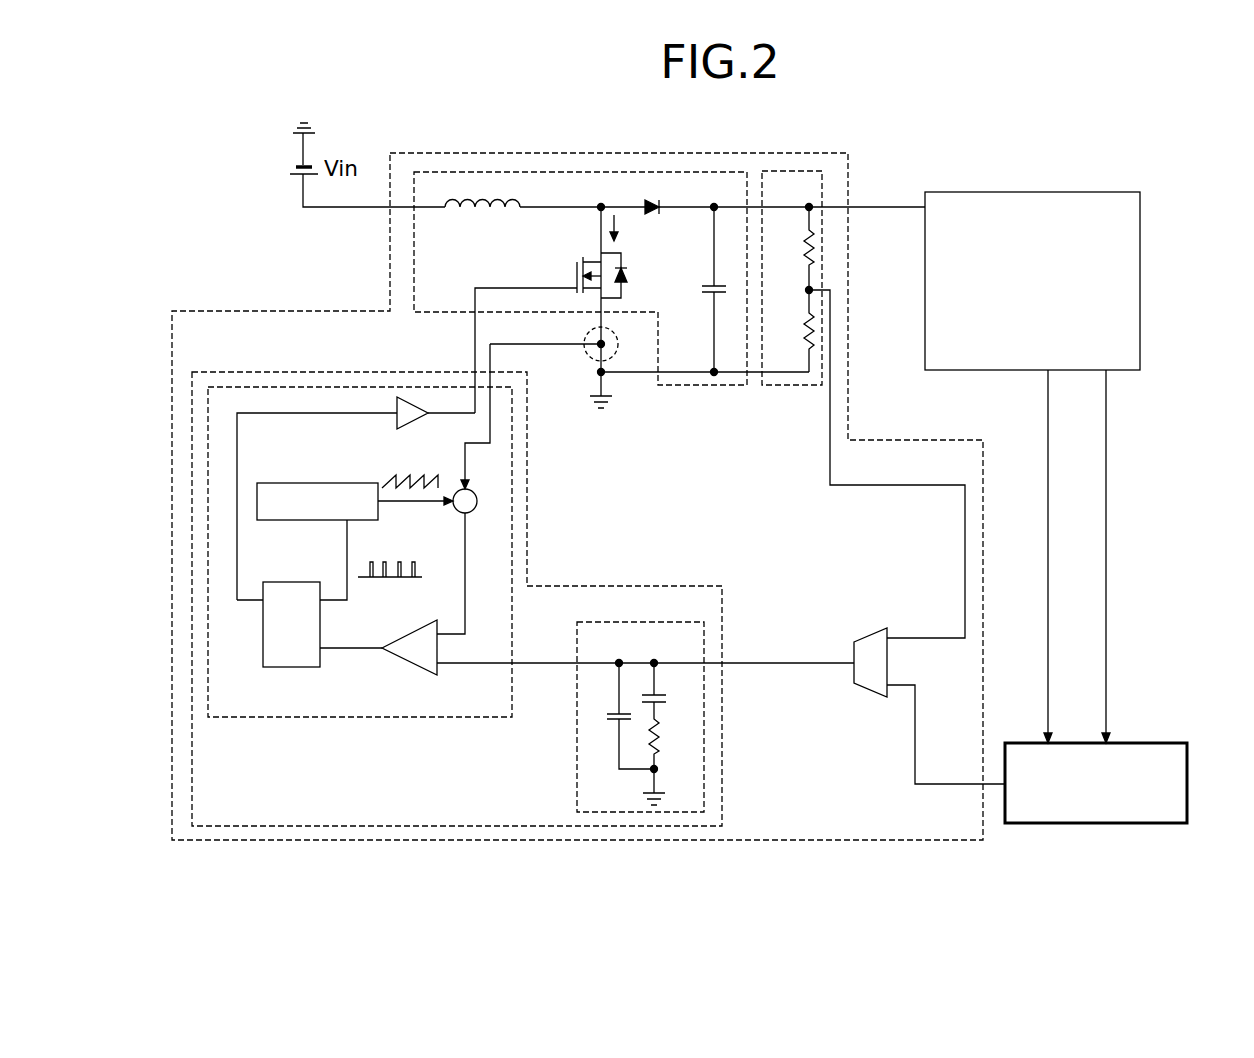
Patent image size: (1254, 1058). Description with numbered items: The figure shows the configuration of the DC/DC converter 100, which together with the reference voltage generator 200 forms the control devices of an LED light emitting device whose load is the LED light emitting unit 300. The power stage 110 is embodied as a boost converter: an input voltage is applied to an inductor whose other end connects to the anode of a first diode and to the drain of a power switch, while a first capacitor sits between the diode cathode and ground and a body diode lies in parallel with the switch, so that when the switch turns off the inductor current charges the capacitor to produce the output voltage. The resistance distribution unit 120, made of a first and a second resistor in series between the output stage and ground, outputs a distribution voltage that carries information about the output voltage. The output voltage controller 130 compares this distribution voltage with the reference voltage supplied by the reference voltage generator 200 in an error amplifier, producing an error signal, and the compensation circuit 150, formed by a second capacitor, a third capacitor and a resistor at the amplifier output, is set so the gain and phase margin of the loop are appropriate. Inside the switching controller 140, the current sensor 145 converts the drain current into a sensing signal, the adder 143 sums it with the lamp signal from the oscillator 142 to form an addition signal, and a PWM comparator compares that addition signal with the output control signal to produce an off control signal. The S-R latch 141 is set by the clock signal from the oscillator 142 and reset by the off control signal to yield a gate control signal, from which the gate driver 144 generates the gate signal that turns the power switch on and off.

The DC/DC converter 100 is at (595, 152).
The power stage 110 is at (703, 387).
The resistance distribution unit 120 is at (791, 170).
The output voltage controller 130 is at (619, 584).
The switching controller 140 is at (366, 719).
The S-R latch 141 is at (290, 668).
The oscillator 142 is at (323, 482).
The adder 143 is at (476, 510).
The gate driver 144 is at (405, 430).
The current sensor 145 is at (586, 354).
The compensation circuit 150 is at (576, 771).
The reference voltage generator 200 is at (1190, 783).
The LED light emitting unit 300 is at (1022, 192).